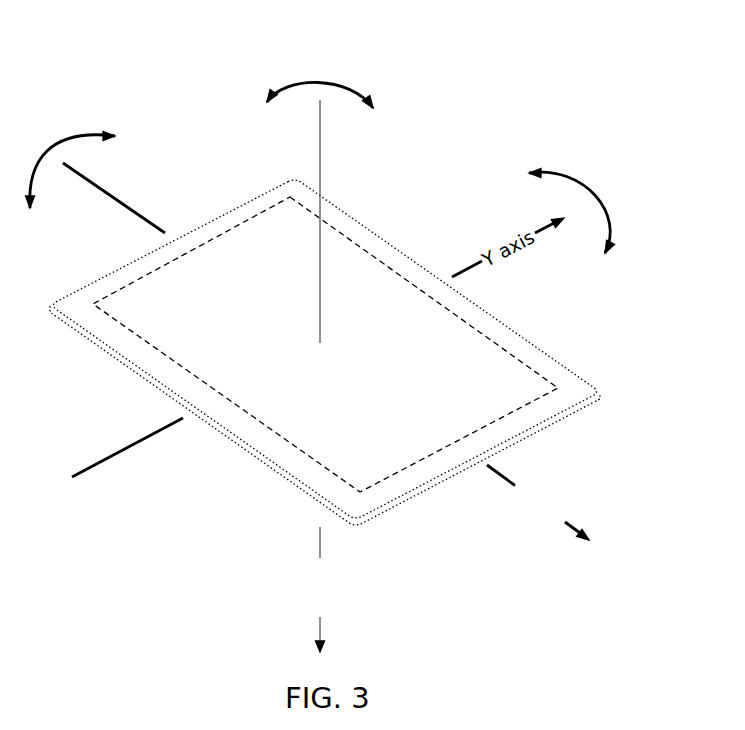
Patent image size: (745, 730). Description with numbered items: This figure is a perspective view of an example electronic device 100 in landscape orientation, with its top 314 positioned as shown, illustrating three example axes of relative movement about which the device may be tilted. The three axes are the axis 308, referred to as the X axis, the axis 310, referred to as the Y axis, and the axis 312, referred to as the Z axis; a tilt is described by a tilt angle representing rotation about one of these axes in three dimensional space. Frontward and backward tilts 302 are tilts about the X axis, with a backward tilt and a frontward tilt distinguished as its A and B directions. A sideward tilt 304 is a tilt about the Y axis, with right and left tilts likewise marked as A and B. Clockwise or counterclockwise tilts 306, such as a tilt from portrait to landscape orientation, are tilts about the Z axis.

The device 100 is at (549, 352).
The frontward and backward tilts 302 is at (68, 133).
The sideward tilt 304 is at (574, 173).
The clockwise or counterclockwise tilts 306 is at (335, 78).
The X axis 308 is at (567, 522).
The Y axis 310 is at (123, 447).
The Z axis 312 is at (322, 177).
The top 314 is at (382, 232).